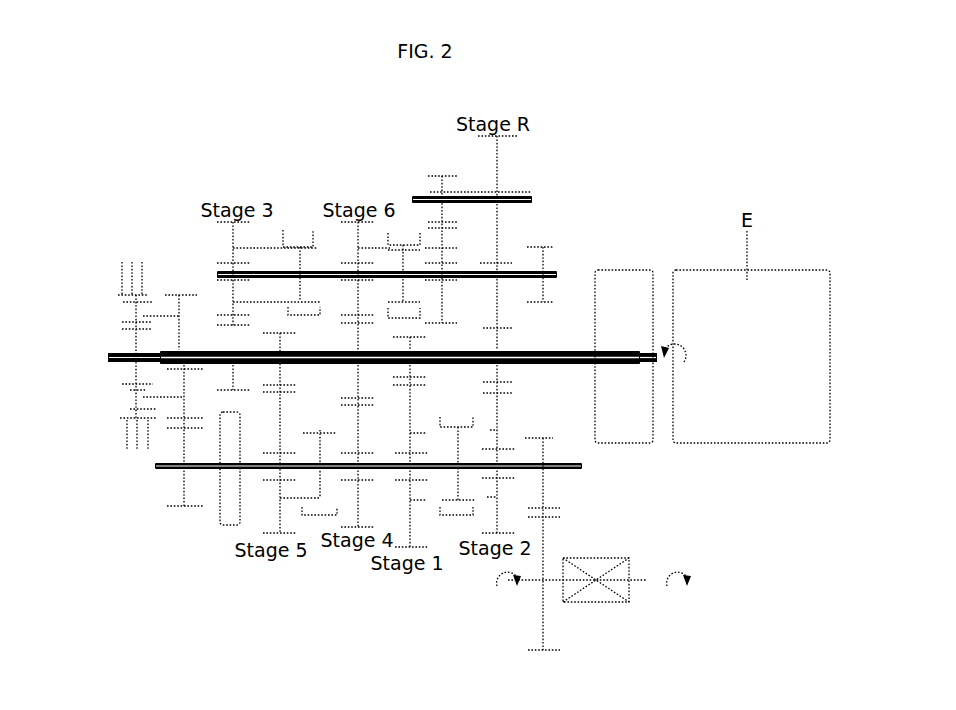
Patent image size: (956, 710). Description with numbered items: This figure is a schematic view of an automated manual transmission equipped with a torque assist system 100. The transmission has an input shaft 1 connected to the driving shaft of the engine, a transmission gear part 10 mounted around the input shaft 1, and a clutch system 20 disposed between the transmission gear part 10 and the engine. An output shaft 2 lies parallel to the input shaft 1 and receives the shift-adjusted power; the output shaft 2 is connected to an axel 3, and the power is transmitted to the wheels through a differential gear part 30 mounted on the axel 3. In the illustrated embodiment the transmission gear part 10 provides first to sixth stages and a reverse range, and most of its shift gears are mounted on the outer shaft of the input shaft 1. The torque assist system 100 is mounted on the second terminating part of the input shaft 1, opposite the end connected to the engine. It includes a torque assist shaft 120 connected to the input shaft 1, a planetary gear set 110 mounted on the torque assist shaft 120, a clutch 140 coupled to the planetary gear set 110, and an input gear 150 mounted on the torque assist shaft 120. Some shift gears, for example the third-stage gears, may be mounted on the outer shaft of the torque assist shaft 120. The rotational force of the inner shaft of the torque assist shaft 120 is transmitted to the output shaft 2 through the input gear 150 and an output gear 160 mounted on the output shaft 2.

The input shaft 1 is at (558, 344).
The output shaft 2 is at (583, 465).
The axel 3 is at (552, 588).
The transmission gear part 10 is at (367, 176).
The clutch system 20 is at (636, 245).
The differential gear part 30 is at (596, 561).
The torque assist system 100 is at (137, 243).
The planetary gear set 110 is at (98, 329).
The torque assist shaft 120 is at (212, 378).
The clutch 140 is at (119, 278).
The input gear 150 is at (174, 293).
The output gear 160 is at (183, 489).